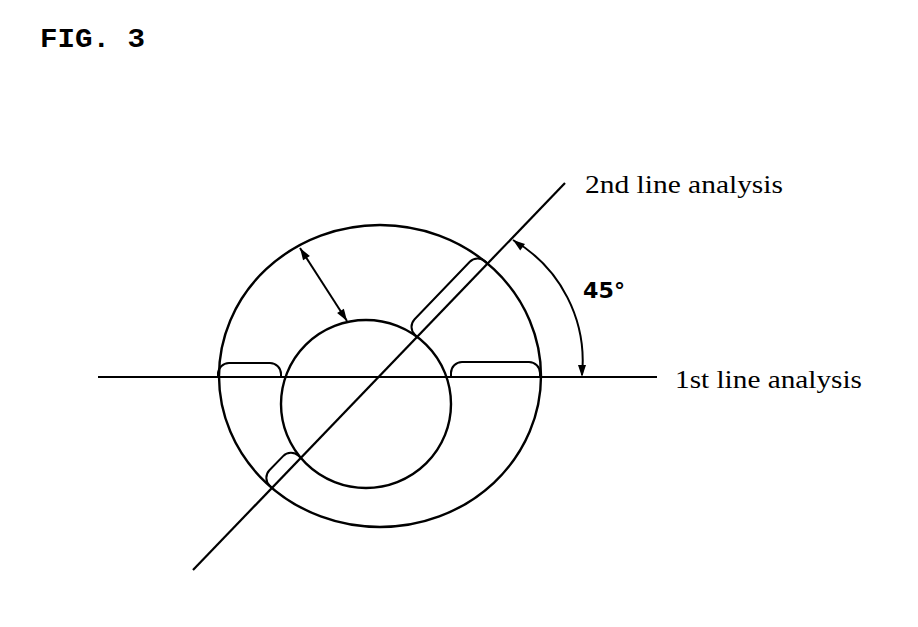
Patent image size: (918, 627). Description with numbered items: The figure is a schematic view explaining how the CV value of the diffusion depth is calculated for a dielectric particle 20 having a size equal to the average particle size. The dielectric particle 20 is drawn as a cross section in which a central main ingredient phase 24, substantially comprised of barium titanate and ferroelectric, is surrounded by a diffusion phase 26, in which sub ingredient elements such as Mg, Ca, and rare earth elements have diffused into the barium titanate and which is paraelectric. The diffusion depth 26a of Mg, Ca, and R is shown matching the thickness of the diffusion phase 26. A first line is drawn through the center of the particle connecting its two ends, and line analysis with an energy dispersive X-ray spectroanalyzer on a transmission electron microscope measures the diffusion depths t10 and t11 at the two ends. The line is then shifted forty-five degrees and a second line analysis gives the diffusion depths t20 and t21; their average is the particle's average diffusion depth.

The dielectric particle 20 is at (382, 353).
The main ingredient phase 24 is at (397, 453).
The diffusion phase 26 is at (470, 477).
The diffusion depth 26a is at (313, 290).
The diffusion depth t10 is at (249, 357).
The diffusion depth t11 is at (495, 356).
The diffusion depth t20 is at (270, 456).
The diffusion depth t21 is at (443, 297).